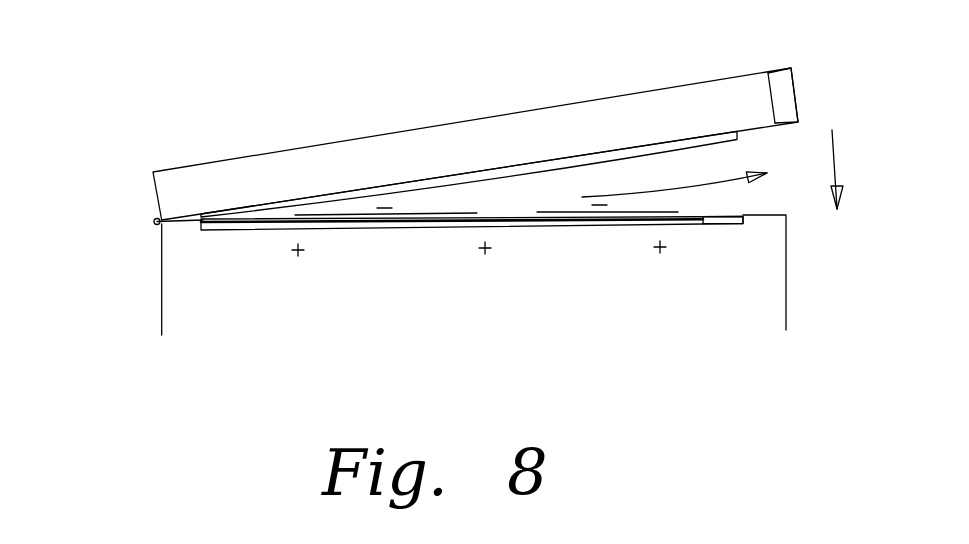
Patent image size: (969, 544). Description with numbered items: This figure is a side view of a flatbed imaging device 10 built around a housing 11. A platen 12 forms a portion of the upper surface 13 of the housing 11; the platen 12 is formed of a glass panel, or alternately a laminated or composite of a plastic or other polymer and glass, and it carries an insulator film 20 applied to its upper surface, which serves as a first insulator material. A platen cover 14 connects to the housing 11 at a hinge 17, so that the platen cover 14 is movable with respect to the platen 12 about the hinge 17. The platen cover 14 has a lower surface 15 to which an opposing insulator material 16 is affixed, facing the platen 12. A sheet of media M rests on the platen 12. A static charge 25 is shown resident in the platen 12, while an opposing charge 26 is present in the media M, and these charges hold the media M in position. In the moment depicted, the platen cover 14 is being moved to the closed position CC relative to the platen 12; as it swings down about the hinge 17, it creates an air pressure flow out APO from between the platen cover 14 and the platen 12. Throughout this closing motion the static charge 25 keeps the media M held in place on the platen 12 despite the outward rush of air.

The flatbed imaging device 10 is at (135, 48).
The housing 11 is at (168, 290).
The platen 12 is at (590, 227).
The upper surface 13 is at (189, 217).
The platen cover 14 is at (640, 98).
The lower surface 15 is at (757, 130).
The opposing insulator material 16 is at (670, 150).
The hinge 17 is at (154, 222).
The insulator film 20 is at (704, 224).
The static charge 25 is at (487, 252).
The opposing charge 26 is at (387, 202).
The media M is at (442, 215).
The closed position CC is at (837, 157).
The air pressure flow out APO is at (741, 178).